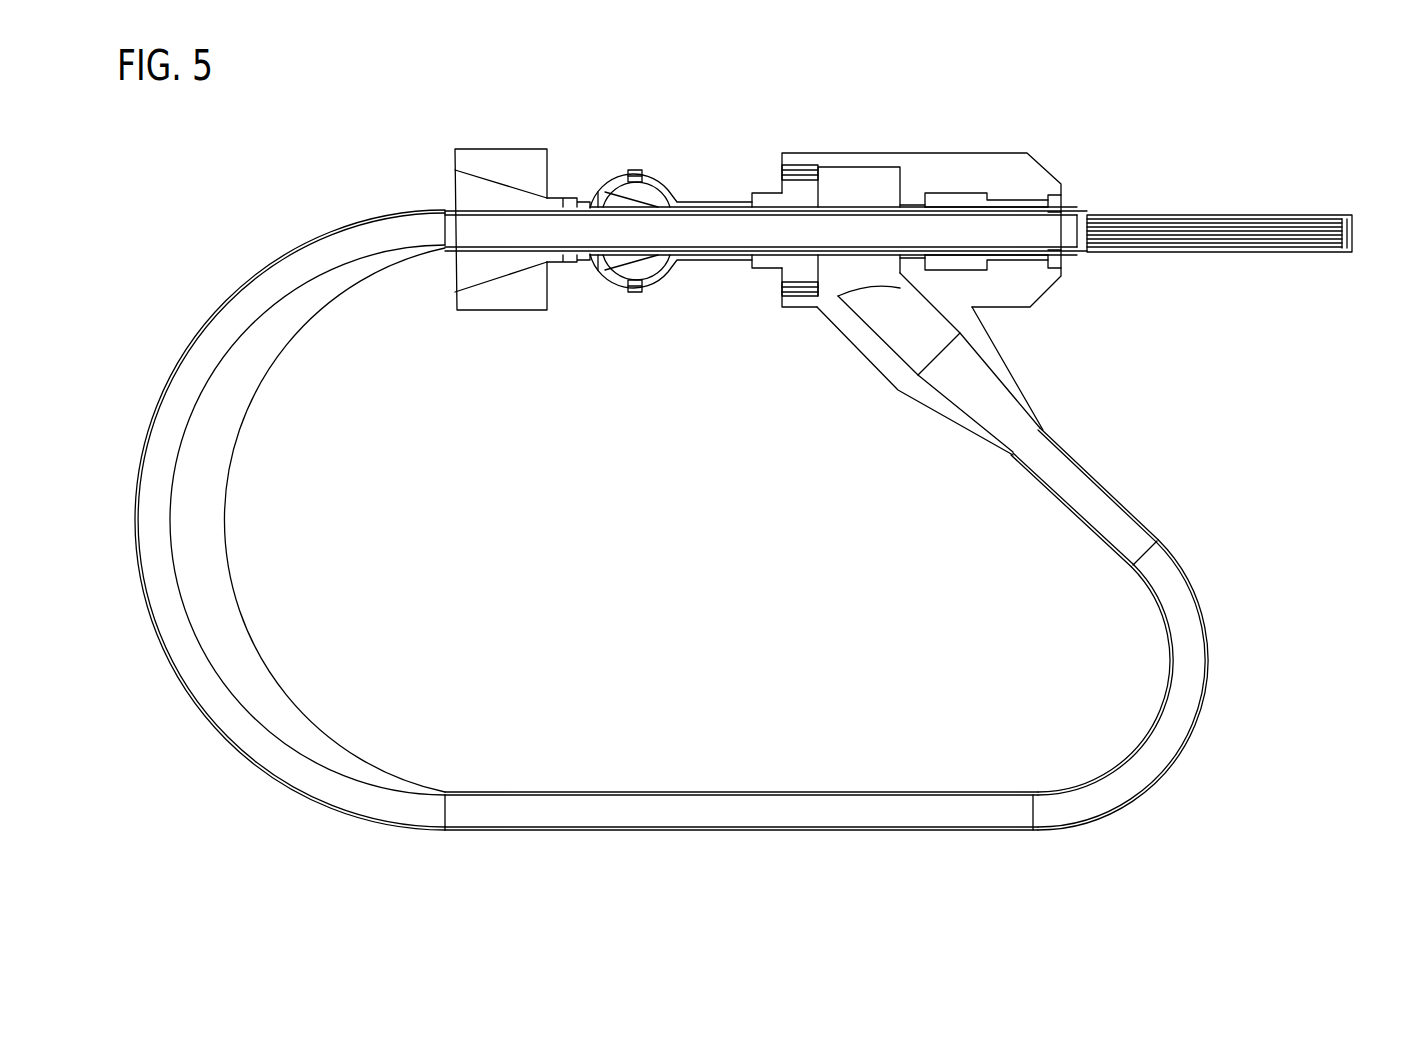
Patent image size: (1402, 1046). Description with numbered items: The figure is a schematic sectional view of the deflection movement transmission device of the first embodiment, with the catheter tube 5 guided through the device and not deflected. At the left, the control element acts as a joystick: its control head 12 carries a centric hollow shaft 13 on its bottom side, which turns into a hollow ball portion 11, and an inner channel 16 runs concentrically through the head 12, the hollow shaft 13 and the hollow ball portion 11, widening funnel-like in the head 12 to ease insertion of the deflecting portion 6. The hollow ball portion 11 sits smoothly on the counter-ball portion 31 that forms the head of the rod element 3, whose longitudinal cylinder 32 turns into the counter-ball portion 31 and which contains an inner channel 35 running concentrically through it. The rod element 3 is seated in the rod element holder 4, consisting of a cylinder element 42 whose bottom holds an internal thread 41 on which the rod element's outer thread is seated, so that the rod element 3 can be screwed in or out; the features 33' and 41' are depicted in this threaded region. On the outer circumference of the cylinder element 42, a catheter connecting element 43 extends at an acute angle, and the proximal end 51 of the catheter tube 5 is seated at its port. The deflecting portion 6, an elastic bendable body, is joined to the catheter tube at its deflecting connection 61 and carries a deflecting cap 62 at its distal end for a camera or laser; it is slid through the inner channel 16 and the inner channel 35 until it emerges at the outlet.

The rod element 3 is at (888, 206).
The rod element holder 4 is at (1033, 175).
The catheter tube 5 is at (1145, 529).
The deflecting portion 6 is at (1213, 213).
The hollow ball portion 11 is at (600, 272).
The control head 12 is at (503, 160).
The hollow shaft 13 is at (574, 200).
The inner channel 16 is at (470, 265).
The counter-ball portion 31 is at (646, 270).
The longitudinal cylinder 32 is at (768, 206).
The sleeve 33' is at (986, 178).
The inner channel 35 is at (708, 228).
The internal thread 41 is at (923, 171).
The stepped block 41' is at (986, 172).
The cylinder element 42 is at (908, 165).
The catheter connecting element 43 is at (972, 427).
The proximal end 51 is at (1043, 431).
The deflecting connection 61 is at (1088, 211).
The deflecting cap 62 is at (1344, 216).